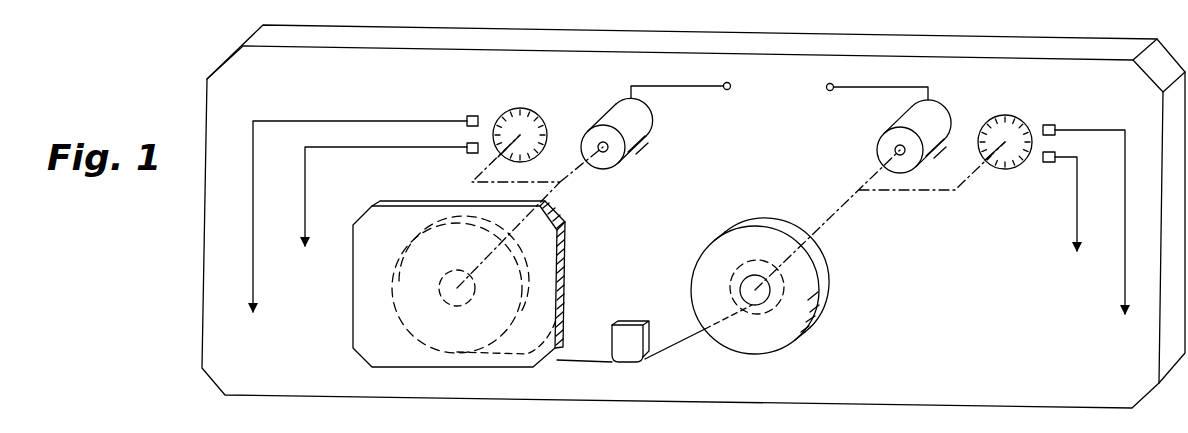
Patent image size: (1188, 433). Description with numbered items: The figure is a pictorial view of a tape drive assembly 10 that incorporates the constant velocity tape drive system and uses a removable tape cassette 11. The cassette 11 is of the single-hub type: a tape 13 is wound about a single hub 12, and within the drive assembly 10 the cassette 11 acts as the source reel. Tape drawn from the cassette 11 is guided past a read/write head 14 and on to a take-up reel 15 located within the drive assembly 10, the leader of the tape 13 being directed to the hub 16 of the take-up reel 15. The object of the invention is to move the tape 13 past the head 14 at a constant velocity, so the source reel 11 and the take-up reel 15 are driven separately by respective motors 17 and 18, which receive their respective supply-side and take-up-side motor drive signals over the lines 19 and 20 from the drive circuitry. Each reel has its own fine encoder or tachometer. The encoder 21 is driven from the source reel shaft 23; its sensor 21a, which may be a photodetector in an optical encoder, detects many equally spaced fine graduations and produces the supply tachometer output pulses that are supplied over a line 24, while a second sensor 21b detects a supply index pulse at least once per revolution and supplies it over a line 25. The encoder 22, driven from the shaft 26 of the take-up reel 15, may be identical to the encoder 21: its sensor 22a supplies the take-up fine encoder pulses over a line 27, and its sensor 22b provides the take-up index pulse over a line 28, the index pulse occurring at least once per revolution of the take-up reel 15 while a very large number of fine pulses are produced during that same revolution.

The tape drive assembly 10 is at (172, 309).
The tape cassette 11 is at (576, 246).
The hub 12 is at (447, 293).
The tape 13 is at (557, 317).
The read/write head 14 is at (633, 328).
The take-up reel 15 is at (772, 216).
The hub 16 is at (738, 285).
The motor 17 is at (616, 110).
The motor 18 is at (934, 114).
The line 19 is at (667, 86).
The line 20 is at (861, 87).
The fine encoder 21 is at (533, 108).
The sensor 21a is at (471, 115).
The sensor 21b is at (471, 154).
The fine encoder 22 is at (1007, 116).
The sensor 22a is at (1058, 126).
The sensor 22b is at (1050, 164).
The source reel shaft 23 is at (565, 182).
The line 24 is at (349, 120).
The line 25 is at (340, 148).
The shaft 26 is at (861, 191).
The line 27 is at (1125, 182).
The line 28 is at (1075, 218).